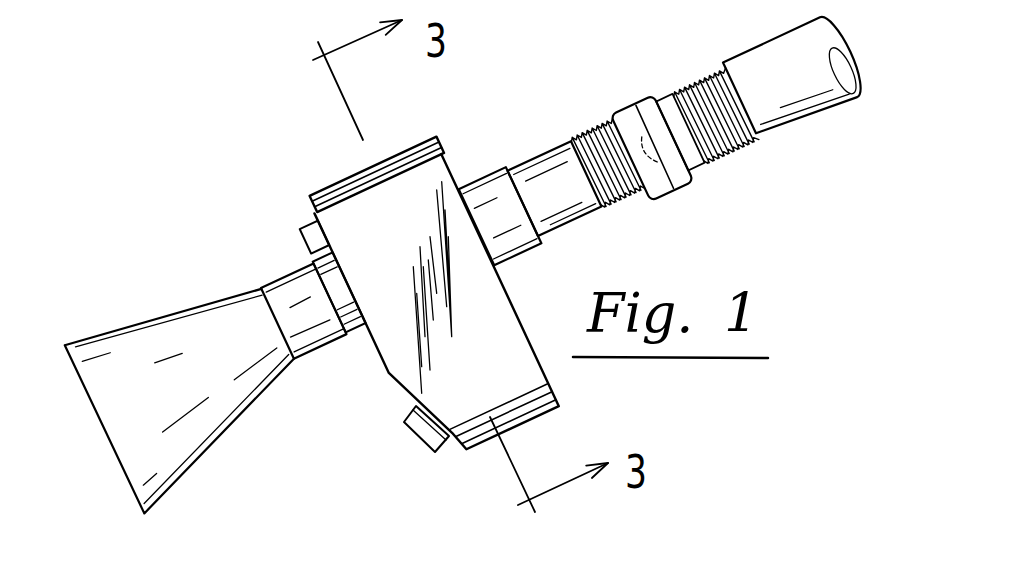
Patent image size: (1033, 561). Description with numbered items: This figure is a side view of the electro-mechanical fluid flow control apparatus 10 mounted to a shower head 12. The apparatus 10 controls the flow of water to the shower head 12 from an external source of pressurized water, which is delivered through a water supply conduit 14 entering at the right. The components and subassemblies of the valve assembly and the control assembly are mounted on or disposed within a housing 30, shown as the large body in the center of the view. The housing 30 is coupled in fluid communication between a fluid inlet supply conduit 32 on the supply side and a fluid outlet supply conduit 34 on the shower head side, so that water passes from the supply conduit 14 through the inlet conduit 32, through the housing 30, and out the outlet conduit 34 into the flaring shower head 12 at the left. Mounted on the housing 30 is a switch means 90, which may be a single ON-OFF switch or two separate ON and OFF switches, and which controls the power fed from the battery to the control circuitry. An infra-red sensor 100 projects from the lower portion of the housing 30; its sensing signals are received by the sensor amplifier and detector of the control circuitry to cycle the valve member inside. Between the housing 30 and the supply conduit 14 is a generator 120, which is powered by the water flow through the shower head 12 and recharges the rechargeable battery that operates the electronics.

The electro-mechanical fluid flow control apparatus 10 is at (320, 160).
The shower head 12 is at (180, 291).
The water supply conduit 14 is at (775, 45).
The housing 30 is at (417, 143).
The fluid inlet supply conduit 32 is at (583, 219).
The fluid outlet supply conduit 34 is at (362, 328).
The switch means 90 is at (301, 240).
The infra-red sensor 100 is at (426, 441).
The generator 120 is at (505, 168).